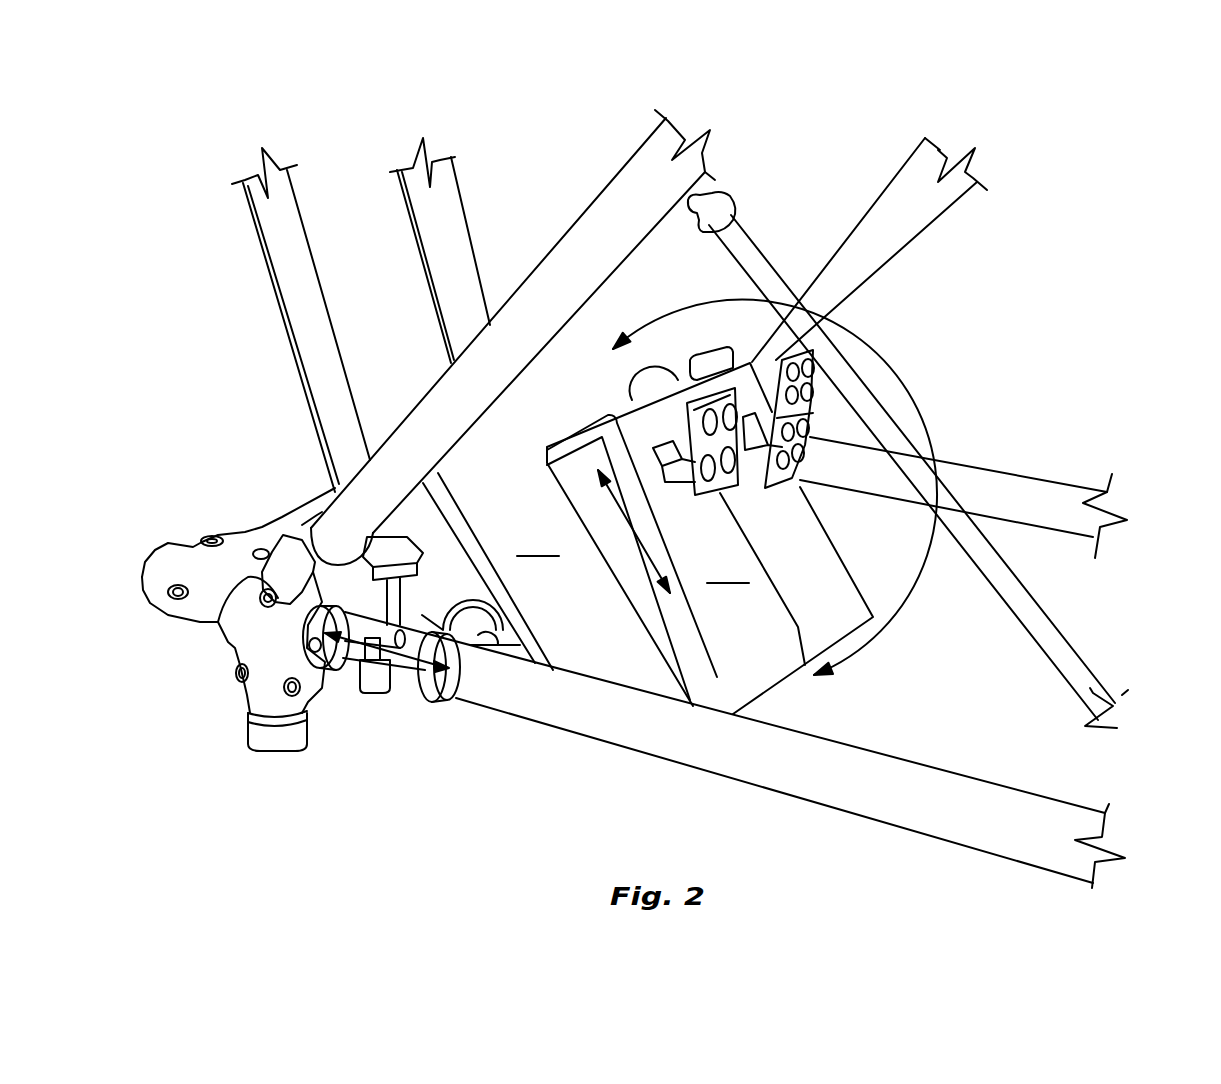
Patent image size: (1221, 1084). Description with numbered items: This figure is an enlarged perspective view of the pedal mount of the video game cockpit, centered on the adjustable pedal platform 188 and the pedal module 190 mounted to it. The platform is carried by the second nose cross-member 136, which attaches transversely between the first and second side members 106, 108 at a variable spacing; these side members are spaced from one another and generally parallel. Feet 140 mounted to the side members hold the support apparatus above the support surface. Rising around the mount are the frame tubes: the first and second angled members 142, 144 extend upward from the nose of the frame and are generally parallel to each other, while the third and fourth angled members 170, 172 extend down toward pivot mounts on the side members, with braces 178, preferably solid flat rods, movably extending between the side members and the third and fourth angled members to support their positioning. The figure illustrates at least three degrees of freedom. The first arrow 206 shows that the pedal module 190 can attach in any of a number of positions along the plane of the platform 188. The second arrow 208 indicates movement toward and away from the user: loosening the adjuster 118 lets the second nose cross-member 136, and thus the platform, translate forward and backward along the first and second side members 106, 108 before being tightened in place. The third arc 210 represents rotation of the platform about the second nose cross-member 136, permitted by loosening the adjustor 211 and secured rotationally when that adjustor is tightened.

The first side member 106 is at (885, 808).
The second side member 108 is at (1007, 487).
The adjuster 118 is at (418, 683).
The second nose cross-member 136 is at (503, 640).
The feet 140 is at (277, 744).
The first angled member 142 is at (283, 250).
The second angled member 144 is at (443, 207).
The third angled member 170 is at (617, 197).
The fourth angled member 172 is at (927, 210).
The braces 178 is at (1053, 634).
The adjustable pedal platform 188 is at (695, 530).
The pedal module 190 is at (760, 507).
The first arrow 206 is at (630, 528).
The second arrow 208 is at (328, 662).
The third arc 210 is at (870, 647).
The adjustor 211 is at (385, 545).